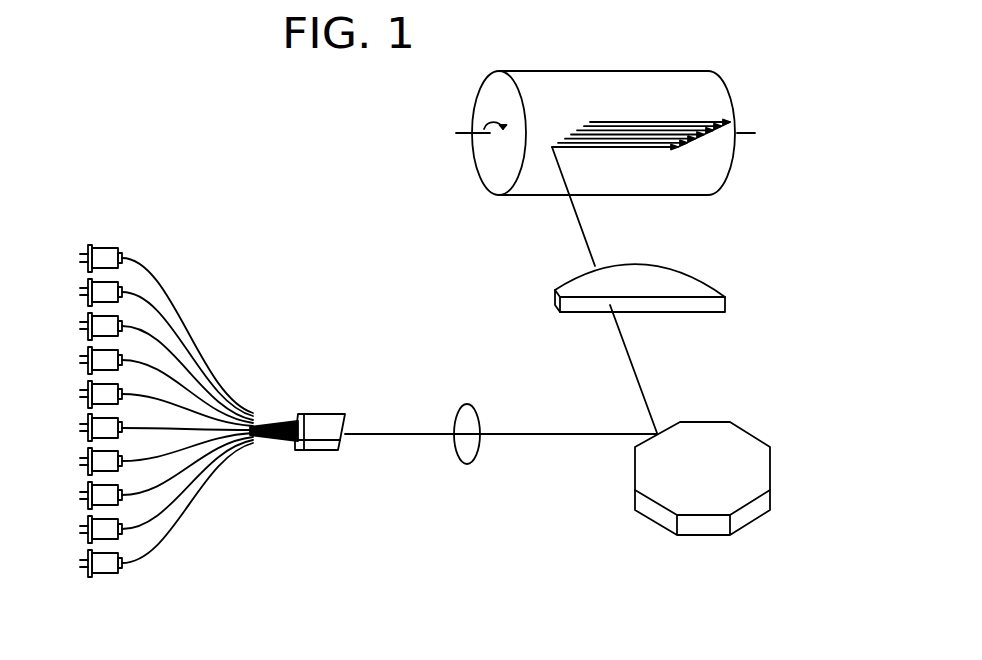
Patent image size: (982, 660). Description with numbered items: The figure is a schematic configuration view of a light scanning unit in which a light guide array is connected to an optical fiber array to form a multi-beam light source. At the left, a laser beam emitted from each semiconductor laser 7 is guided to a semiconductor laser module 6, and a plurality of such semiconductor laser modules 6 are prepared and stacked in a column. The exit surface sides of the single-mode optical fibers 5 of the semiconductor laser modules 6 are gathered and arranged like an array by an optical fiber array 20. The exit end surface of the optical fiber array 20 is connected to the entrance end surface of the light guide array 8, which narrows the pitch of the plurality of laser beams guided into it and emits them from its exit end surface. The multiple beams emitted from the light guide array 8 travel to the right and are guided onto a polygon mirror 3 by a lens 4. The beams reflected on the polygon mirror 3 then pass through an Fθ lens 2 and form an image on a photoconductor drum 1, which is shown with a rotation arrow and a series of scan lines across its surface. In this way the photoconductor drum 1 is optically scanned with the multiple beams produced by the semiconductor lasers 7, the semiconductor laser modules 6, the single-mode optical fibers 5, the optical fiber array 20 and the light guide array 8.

The photoconductor drum 1 is at (712, 100).
The Fθ lens 2 is at (700, 282).
The polygon mirror 3 is at (700, 537).
The lens 4 is at (467, 404).
The single-mode optical fiber 5 is at (153, 264).
The semiconductor laser module 6 is at (102, 257).
The semiconductor laser 7 is at (82, 258).
The light guide array 8 is at (328, 422).
The optical fiber array 20 is at (300, 452).